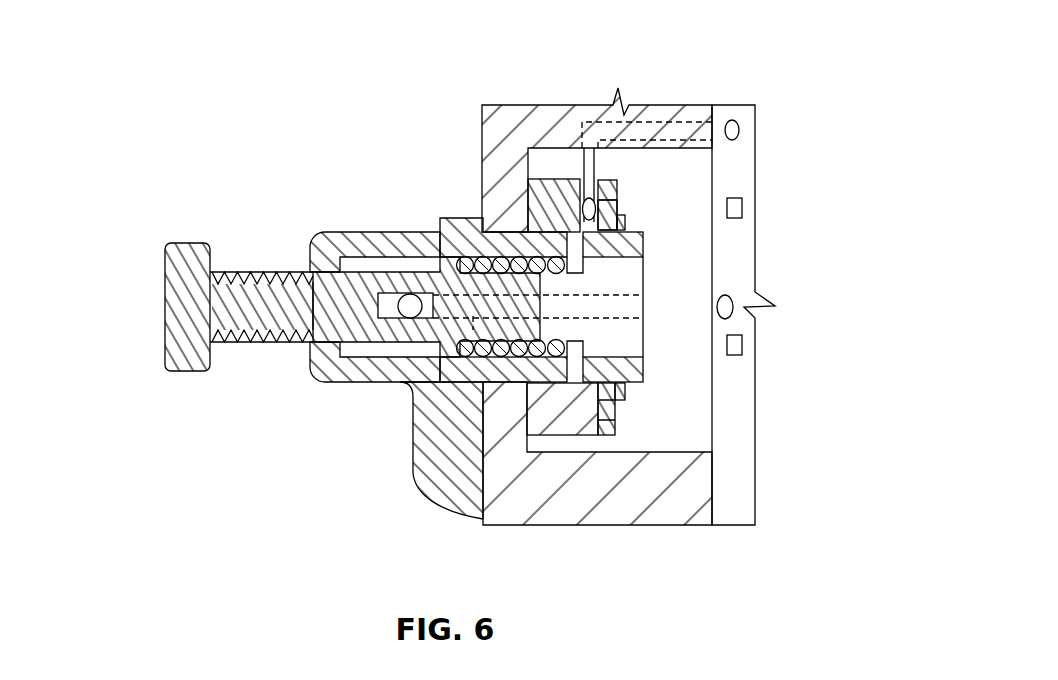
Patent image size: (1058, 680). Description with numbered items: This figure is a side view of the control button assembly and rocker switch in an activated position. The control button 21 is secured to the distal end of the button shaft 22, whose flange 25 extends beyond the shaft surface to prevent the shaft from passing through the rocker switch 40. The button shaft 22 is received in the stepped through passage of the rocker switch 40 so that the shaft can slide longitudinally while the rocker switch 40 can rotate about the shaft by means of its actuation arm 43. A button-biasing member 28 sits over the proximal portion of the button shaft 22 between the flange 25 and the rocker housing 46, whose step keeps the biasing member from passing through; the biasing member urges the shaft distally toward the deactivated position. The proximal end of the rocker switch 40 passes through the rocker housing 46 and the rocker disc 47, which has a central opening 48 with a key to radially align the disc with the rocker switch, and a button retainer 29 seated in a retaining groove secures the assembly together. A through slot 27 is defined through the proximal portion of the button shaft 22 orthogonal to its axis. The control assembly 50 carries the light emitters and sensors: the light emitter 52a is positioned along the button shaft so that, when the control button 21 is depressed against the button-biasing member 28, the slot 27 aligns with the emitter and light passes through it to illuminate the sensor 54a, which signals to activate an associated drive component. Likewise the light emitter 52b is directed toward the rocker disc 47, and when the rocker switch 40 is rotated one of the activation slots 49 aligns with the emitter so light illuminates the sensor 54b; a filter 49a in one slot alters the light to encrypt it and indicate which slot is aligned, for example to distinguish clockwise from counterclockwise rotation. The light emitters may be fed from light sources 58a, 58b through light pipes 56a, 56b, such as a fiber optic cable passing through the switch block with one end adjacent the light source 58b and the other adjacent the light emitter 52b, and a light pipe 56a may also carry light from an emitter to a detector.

The control button 21 is at (178, 298).
The button shaft 22 is at (262, 358).
The flange 25 is at (447, 265).
The through slot 27 is at (395, 314).
The button-biasing member 28 is at (478, 255).
The button retainer 29 is at (611, 209).
The rocker switch 40 is at (320, 253).
The actuation arm 43 is at (413, 480).
The rocker housing 46 is at (548, 190).
The rocker disc 47 is at (607, 428).
The central opening 48 is at (560, 215).
The activation slots 49 is at (614, 200).
The filter 49a is at (620, 226).
The control assembly 50 is at (740, 260).
The light emitter 52a is at (408, 318).
The light emitter 52b is at (590, 198).
The sensor 54a is at (745, 343).
The sensor 54b is at (735, 198).
The light pipe 56a is at (473, 316).
The light pipe 56b is at (657, 122).
The light source 58a is at (733, 300).
The light source 58b is at (734, 119).